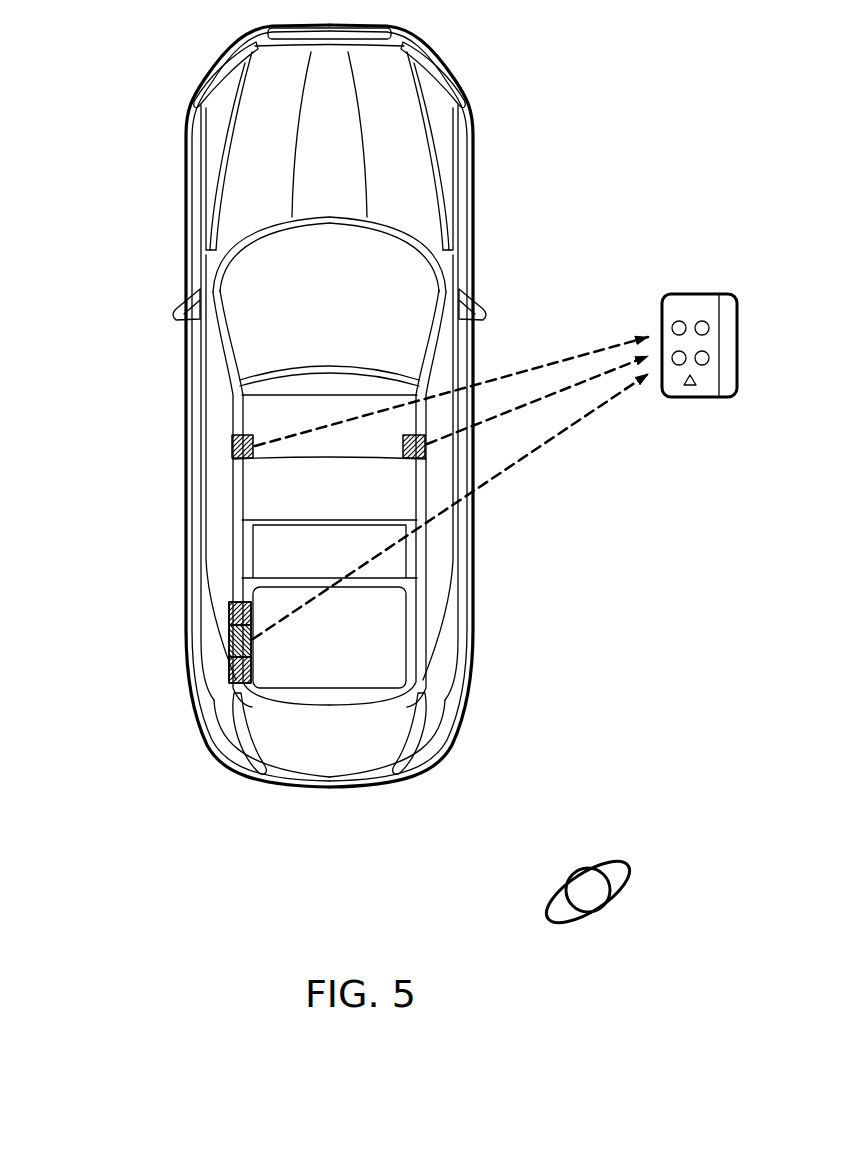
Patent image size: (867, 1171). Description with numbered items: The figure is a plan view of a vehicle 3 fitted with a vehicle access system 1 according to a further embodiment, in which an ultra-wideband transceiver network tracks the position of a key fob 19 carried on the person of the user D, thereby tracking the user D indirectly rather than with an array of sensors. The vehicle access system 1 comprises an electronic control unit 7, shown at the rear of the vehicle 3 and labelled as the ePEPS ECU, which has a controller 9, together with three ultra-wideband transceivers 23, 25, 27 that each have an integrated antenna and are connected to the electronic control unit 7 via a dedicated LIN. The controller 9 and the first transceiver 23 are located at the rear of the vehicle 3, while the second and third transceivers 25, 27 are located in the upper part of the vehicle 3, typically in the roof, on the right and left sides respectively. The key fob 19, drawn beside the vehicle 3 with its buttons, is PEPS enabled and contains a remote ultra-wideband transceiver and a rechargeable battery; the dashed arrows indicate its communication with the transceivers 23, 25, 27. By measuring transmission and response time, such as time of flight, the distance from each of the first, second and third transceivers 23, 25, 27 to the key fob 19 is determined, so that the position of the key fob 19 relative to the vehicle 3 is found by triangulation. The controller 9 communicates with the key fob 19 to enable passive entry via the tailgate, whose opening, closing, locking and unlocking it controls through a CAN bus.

The vehicle access system 1 is at (575, 594).
The vehicle 3 is at (412, 172).
The electronic control unit 7 is at (363, 544).
The controller 9 is at (242, 673).
The key fob 19 is at (705, 294).
The first transceiver 23 is at (237, 613).
The second transceiver 25 is at (232, 445).
The third transceiver 27 is at (412, 448).
The user D is at (617, 877).